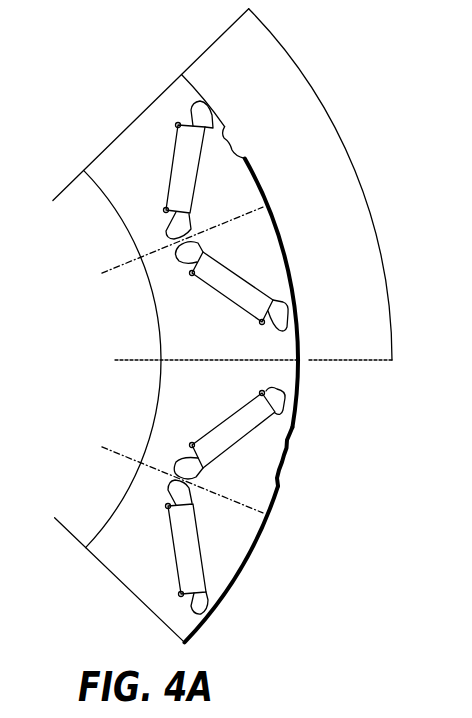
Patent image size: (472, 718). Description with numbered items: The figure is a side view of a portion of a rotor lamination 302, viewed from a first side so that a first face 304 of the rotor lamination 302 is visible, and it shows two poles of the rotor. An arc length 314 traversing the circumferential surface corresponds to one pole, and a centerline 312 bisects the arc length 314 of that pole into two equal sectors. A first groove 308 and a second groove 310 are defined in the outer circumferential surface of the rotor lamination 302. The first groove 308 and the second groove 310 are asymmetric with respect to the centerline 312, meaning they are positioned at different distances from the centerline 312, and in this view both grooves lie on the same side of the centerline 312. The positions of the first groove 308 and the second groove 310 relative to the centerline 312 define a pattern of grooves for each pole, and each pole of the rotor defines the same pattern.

The rotor lamination 302 is at (129, 591).
The first face 304 is at (170, 305).
The first groove 308 is at (226, 126).
The second groove 310 is at (243, 158).
The centerline 312 is at (118, 266).
The arc length 314 is at (354, 172).